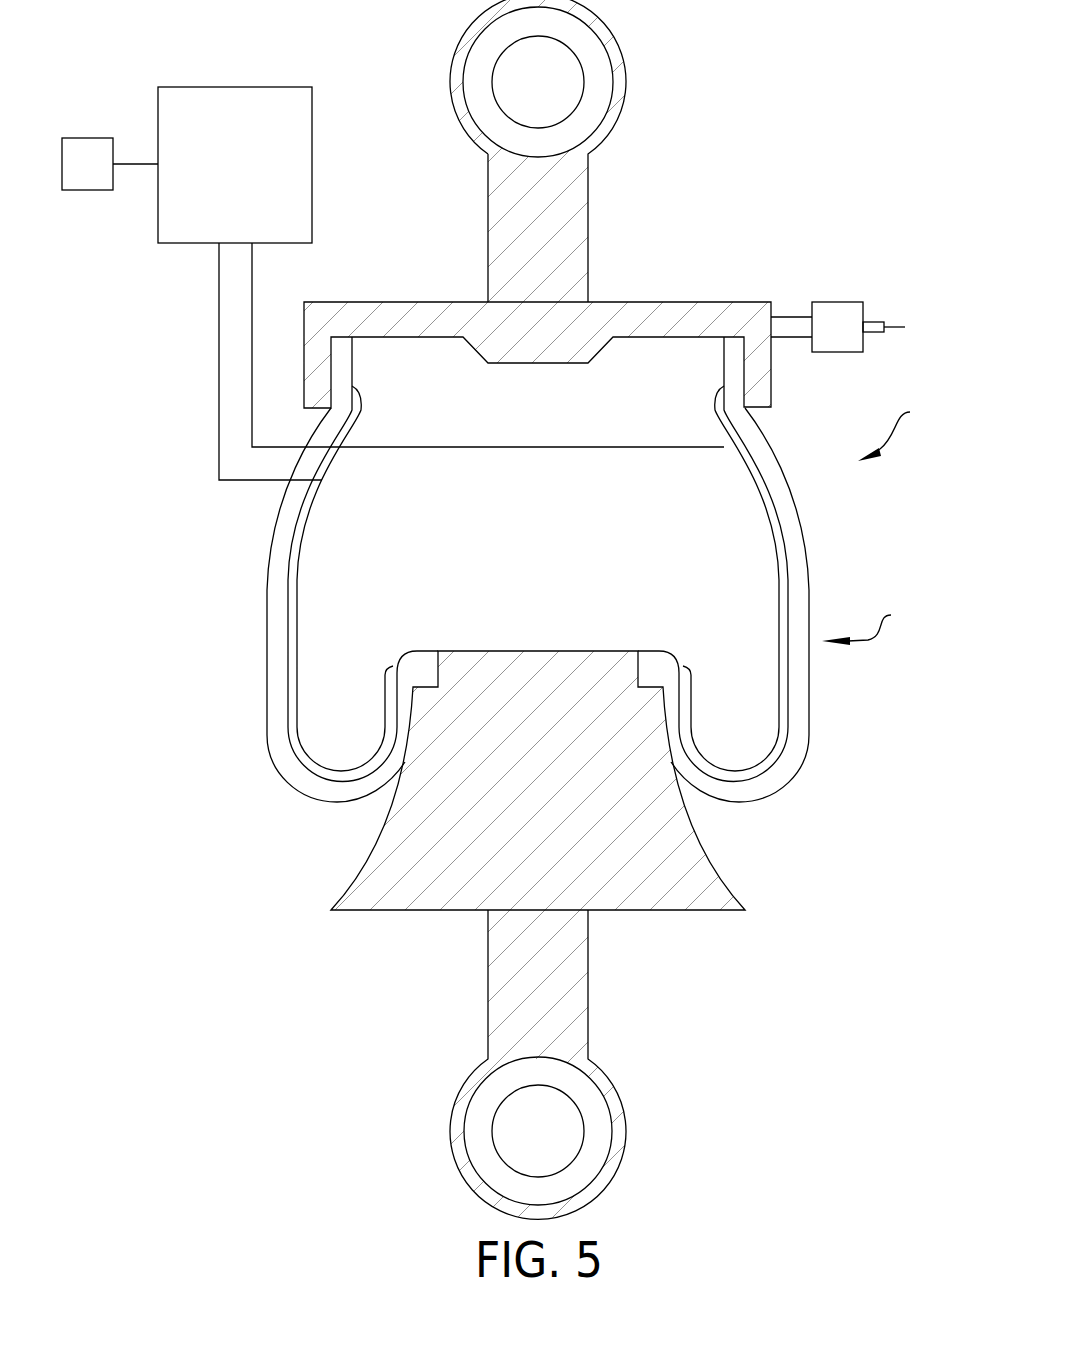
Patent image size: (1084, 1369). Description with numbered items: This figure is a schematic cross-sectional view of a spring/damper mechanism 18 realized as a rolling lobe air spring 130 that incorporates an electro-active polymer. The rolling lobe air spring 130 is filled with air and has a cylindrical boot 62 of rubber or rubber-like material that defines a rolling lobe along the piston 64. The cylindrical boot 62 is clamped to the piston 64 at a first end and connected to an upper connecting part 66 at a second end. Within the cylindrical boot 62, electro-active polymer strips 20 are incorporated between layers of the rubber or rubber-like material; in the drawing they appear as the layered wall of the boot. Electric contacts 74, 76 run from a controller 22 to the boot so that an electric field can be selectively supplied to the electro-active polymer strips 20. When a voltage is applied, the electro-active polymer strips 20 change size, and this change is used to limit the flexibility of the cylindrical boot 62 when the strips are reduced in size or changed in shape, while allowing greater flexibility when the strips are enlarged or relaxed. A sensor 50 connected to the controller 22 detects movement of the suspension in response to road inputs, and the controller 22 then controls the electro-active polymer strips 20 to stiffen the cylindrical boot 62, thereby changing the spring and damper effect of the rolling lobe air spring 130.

The spring/damper mechanism 18 is at (898, 431).
The electro-active polymer strips 20 is at (296, 695).
The controller 22 is at (249, 176).
The sensor 50 is at (101, 176).
The cylindrical boot 62 is at (810, 715).
The piston 64 is at (708, 856).
The upper connecting part 66 is at (698, 315).
The electric contact 74 is at (442, 389).
The electric contact 76 is at (250, 482).
The rolling lobe air spring 130 is at (877, 623).